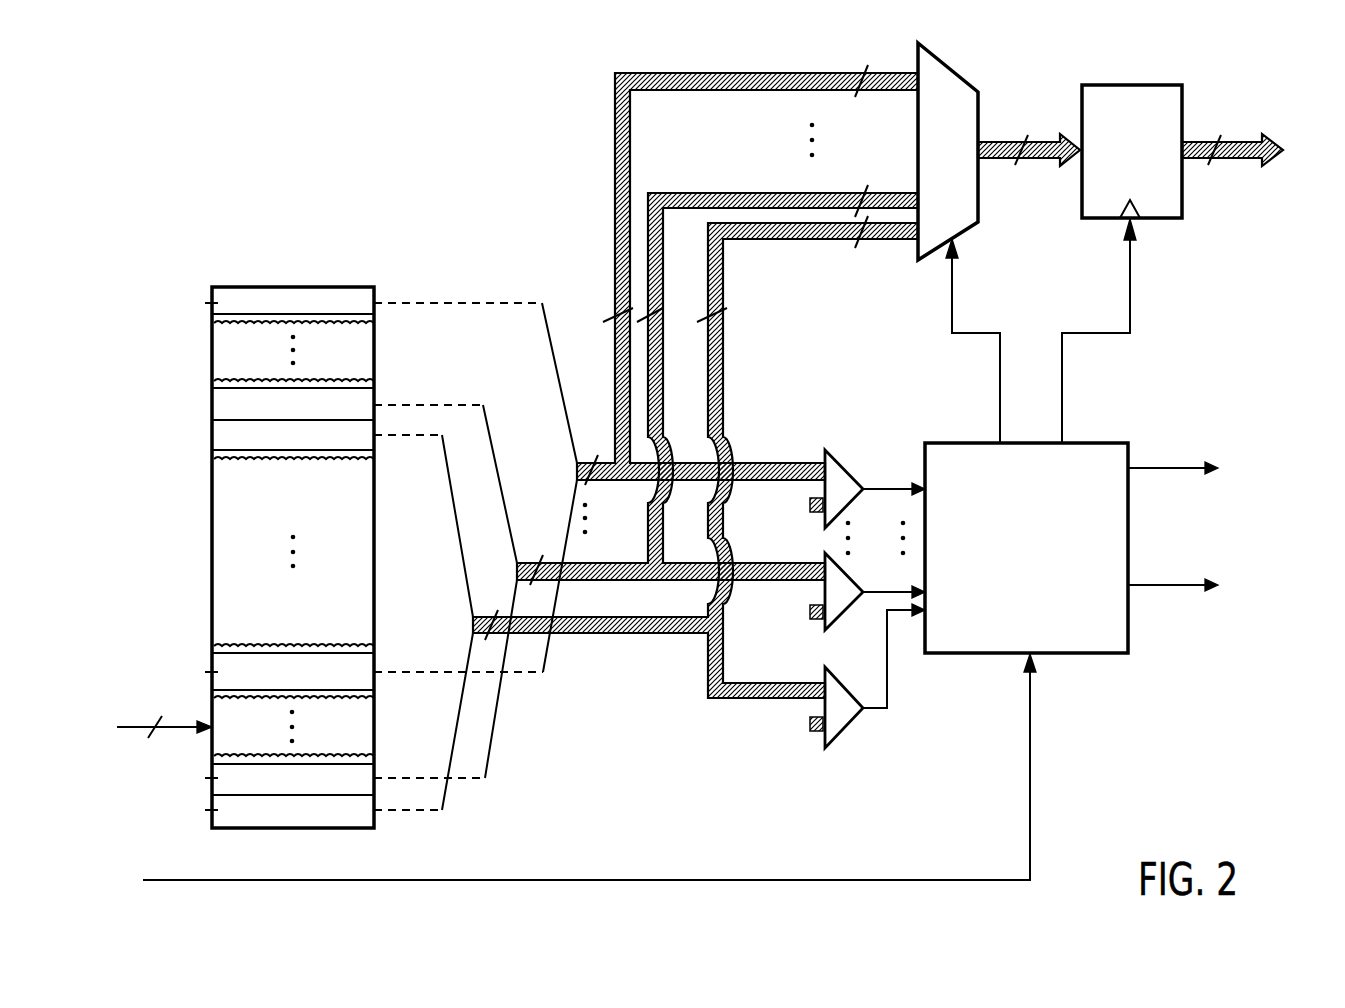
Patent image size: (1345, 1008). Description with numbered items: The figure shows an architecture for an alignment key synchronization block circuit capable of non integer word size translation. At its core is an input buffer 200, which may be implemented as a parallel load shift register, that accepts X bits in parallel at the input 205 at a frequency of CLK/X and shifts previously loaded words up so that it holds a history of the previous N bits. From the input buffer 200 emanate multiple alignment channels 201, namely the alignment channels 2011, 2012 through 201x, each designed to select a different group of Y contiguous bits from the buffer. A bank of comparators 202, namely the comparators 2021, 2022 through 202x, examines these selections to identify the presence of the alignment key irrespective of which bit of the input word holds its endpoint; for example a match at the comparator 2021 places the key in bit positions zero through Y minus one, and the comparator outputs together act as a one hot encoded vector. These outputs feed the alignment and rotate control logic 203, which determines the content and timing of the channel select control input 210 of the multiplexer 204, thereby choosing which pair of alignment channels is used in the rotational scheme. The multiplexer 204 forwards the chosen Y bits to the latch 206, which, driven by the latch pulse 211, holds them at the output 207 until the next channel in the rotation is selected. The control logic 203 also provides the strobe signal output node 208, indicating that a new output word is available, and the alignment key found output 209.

The input buffer 200 is at (289, 287).
The alignment channels 201 is at (646, 419).
The alignment channel 201x is at (745, 73).
The alignment channel 2012 is at (749, 193).
The alignment channel 2011 is at (793, 240).
The bank of comparators 202 is at (831, 603).
The comparator 202x is at (853, 468).
The comparator 2022 is at (847, 611).
The comparator 2021 is at (847, 727).
The alignment and rotate control logic 203 is at (1114, 639).
The multiplexer 204 is at (948, 63).
The input 205 is at (1036, 165).
The latch 206 is at (1113, 85).
The output 207 is at (1230, 165).
The strobe signal output node 208 is at (1163, 467).
The alignment key found output 209 is at (1163, 584).
The channel select control input 210 is at (955, 293).
The latch pulse 211 is at (1082, 332).